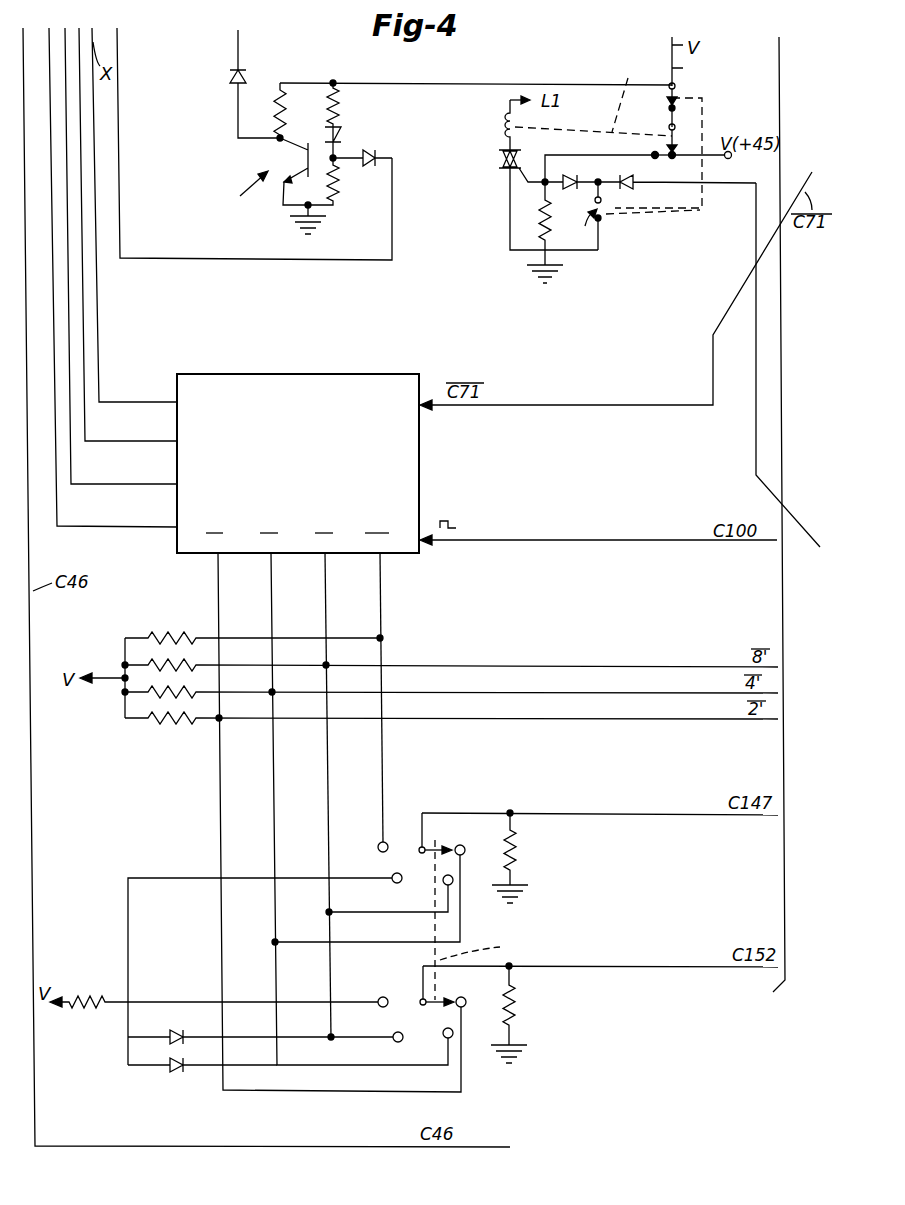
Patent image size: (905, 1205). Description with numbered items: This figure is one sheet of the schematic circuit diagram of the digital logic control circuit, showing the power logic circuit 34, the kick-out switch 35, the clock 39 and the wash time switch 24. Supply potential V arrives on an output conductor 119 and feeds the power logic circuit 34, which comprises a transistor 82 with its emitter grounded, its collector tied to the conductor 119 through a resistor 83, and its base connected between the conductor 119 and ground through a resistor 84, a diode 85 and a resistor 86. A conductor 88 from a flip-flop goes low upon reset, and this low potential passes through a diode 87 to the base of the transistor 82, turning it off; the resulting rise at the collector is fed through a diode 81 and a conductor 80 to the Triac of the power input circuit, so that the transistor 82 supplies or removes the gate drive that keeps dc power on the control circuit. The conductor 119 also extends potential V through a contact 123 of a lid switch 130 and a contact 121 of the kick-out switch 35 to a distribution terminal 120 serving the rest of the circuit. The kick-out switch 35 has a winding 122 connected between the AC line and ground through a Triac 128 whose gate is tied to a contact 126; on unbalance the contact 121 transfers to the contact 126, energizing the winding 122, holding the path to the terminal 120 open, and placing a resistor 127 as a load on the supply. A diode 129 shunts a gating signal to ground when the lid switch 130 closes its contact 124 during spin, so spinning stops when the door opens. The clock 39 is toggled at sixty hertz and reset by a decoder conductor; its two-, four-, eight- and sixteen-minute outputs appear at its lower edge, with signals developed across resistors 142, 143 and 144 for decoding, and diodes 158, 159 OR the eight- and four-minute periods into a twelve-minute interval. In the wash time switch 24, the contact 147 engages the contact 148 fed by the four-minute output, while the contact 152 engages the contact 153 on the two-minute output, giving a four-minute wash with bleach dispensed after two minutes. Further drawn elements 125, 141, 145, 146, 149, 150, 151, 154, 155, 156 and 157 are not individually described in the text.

The wash time switch 24 is at (510, 920).
The power logic circuit 34 is at (241, 191).
The kick-out switch 35 is at (599, 134).
The clock 39 is at (298, 463).
The conductor 80 is at (236, 43).
The diode 81 is at (234, 82).
The transistor 82 is at (305, 157).
The resistor 83 is at (295, 110).
The resistor 84 is at (341, 110).
The diode 85 is at (345, 142).
The resistor 86 is at (340, 196).
The diode 87 is at (376, 156).
The conductor 88 is at (118, 46).
The output conductor 119 is at (697, 61).
The distribution terminal 120 is at (728, 160).
The contact 121 is at (675, 136).
The winding 122 is at (505, 124).
The contact 123 is at (669, 89).
The contact 124 is at (575, 227).
The contact 125 is at (672, 160).
The contact 126 is at (650, 152).
The resistor 127 is at (543, 224).
The Triac 128 is at (506, 172).
The diode 129 is at (630, 188).
The lid switch 130 is at (654, 216).
The resistor 141 is at (191, 632).
The resistor 142 is at (150, 661).
The resistor 143 is at (150, 695).
The resistor 144 is at (165, 725).
The resistor 145 is at (516, 858).
The resistor 146 is at (520, 1012).
The switch contact 147 is at (438, 845).
The switch contact 148 is at (463, 846).
The switch contact 149 is at (441, 883).
The switch contact 150 is at (392, 877).
The switch contact 151 is at (378, 845).
The contact 152 is at (438, 1005).
The contact 153 is at (478, 990).
The switch contact 154 is at (444, 1038).
The switch contact 155 is at (393, 1036).
The switch contact 156 is at (380, 997).
The resistor 157 is at (90, 1000).
The diode 158 is at (178, 1033).
The diode 159 is at (178, 1070).